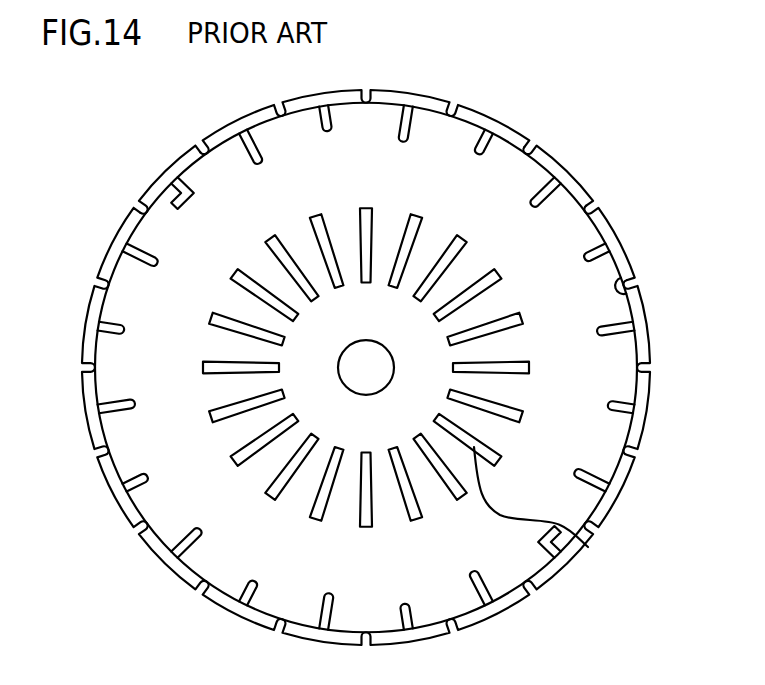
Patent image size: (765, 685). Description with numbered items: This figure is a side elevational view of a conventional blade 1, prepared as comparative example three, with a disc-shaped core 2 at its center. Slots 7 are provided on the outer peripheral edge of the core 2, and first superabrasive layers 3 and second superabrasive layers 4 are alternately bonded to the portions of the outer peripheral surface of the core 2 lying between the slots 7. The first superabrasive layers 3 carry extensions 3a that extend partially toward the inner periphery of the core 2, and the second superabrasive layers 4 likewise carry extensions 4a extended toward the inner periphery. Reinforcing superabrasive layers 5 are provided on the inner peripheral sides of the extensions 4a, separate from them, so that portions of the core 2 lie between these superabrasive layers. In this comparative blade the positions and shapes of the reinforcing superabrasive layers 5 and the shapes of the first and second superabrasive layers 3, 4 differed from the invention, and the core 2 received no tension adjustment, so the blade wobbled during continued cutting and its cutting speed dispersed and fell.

The rotor core (prior art) 1 is at (638, 505).
The core 2 is at (215, 505).
The first superabrasive layer 3 is at (542, 160).
The extension 3a is at (558, 195).
The second superabrasive layer 4 is at (183, 158).
The extension 4a is at (152, 196).
The reinforcing superabrasive layer 5 is at (588, 547).
The slot 7 is at (615, 270).